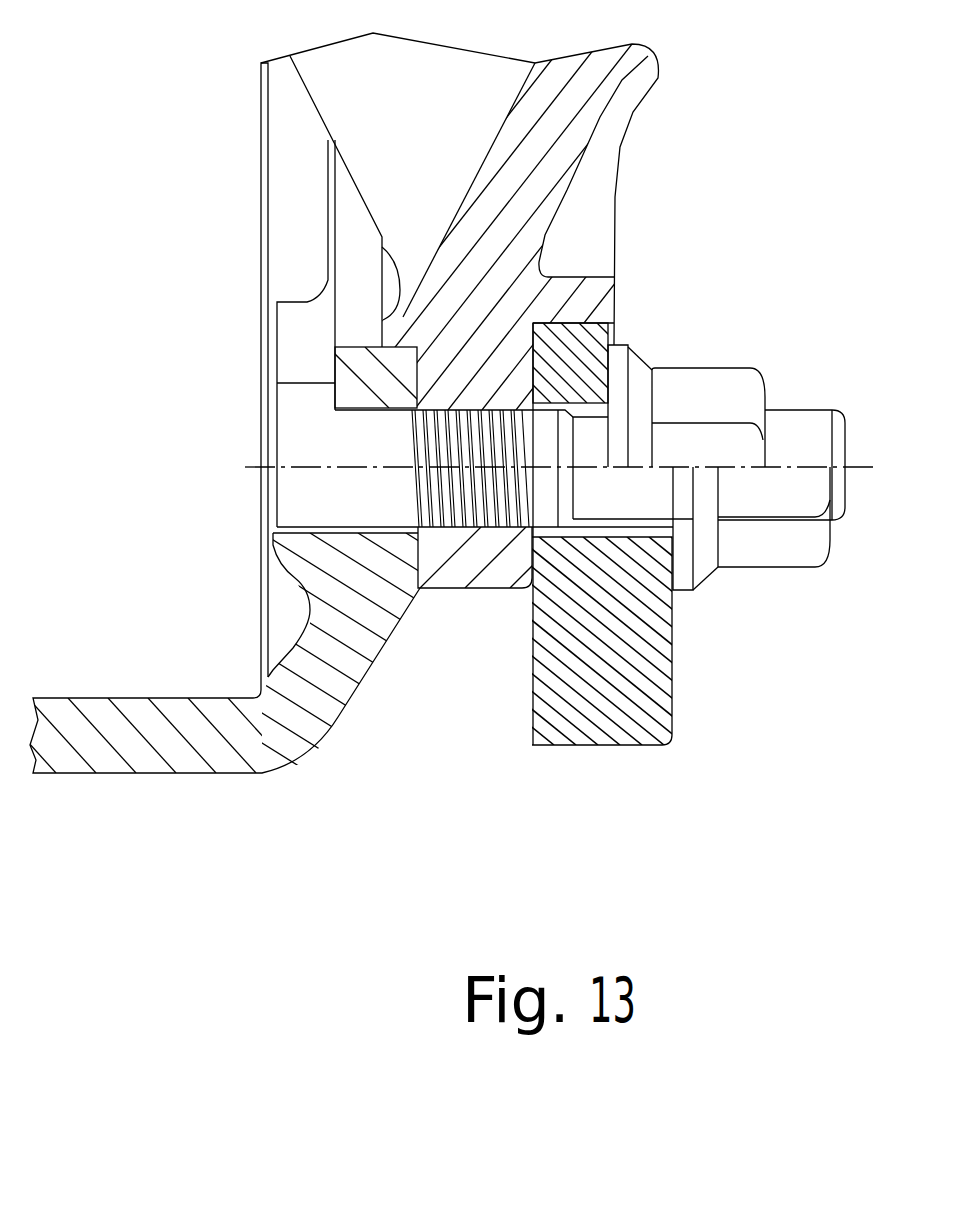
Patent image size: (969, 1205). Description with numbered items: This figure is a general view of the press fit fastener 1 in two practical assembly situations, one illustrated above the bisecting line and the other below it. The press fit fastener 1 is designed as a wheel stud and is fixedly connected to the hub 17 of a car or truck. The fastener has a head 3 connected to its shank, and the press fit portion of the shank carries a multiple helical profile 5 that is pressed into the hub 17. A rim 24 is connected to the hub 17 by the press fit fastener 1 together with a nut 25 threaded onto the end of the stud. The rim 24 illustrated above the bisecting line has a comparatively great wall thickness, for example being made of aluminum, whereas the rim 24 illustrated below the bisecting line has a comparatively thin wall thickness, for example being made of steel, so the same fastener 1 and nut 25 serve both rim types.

The press fit fastener 1 is at (290, 492).
The head 3 is at (297, 411).
The helical profile 5 is at (477, 530).
The hub 17 is at (580, 113).
The rim 24 is at (575, 352).
The nut 25 is at (717, 383).